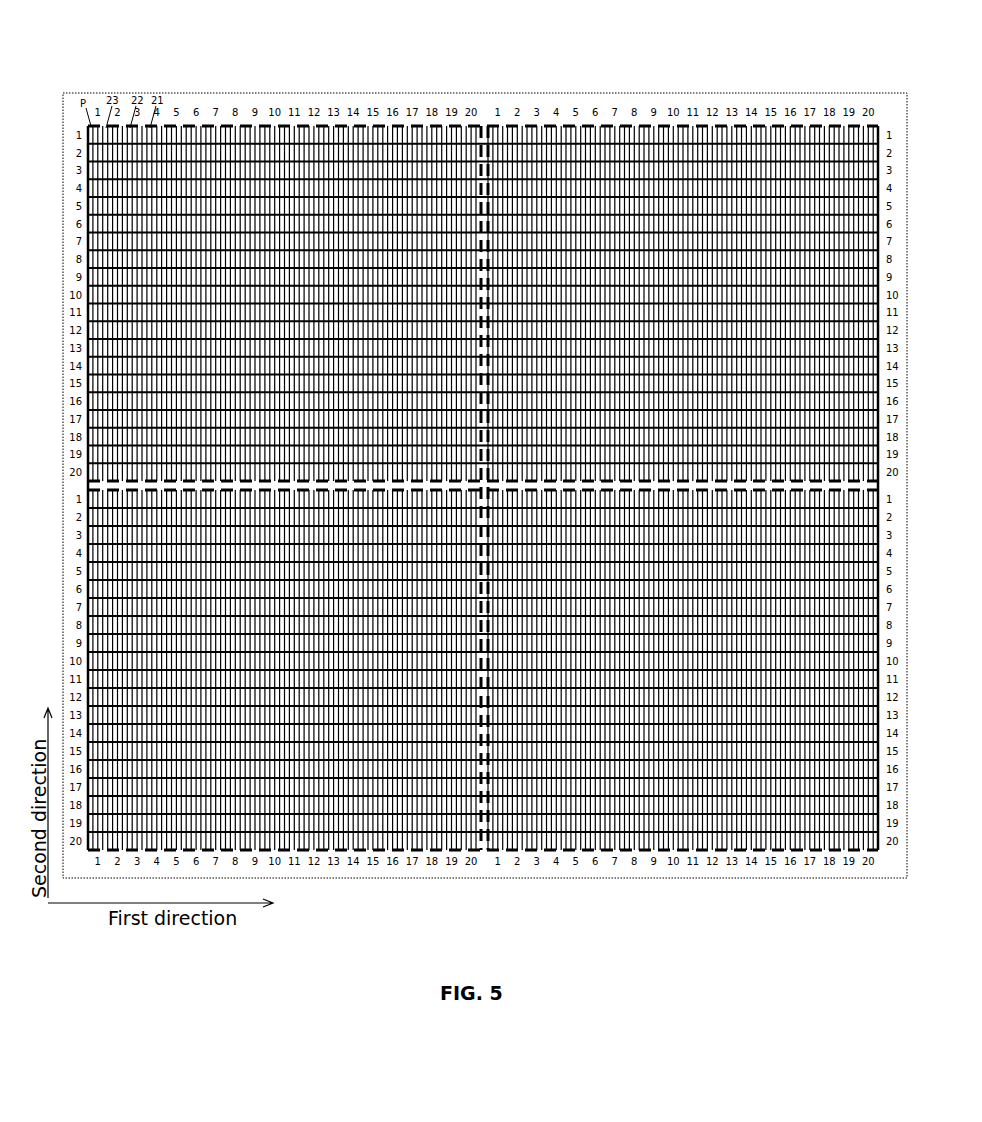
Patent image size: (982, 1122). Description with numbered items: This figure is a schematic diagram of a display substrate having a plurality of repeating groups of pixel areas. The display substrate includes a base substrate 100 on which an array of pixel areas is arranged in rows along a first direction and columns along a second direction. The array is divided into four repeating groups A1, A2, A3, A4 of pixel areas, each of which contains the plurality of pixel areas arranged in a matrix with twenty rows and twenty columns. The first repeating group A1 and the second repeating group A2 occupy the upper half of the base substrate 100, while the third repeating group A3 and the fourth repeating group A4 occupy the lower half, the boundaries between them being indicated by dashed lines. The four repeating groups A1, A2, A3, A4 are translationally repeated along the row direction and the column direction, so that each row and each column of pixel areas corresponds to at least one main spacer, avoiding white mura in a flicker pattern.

The base substrate 100 is at (483, 493).
The repeating group of pixel areas A1 is at (300, 116).
The repeating group of pixel areas A2 is at (680, 116).
The repeating group of pixel areas A3 is at (280, 843).
The repeating group of pixel areas A4 is at (655, 843).